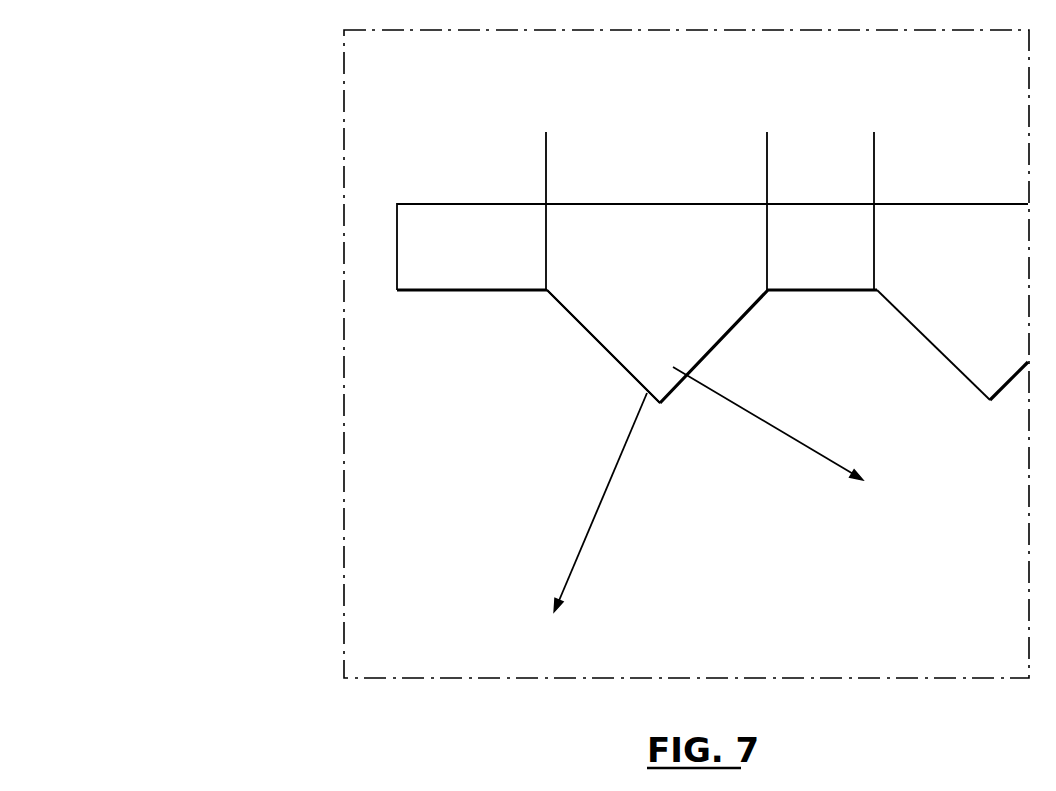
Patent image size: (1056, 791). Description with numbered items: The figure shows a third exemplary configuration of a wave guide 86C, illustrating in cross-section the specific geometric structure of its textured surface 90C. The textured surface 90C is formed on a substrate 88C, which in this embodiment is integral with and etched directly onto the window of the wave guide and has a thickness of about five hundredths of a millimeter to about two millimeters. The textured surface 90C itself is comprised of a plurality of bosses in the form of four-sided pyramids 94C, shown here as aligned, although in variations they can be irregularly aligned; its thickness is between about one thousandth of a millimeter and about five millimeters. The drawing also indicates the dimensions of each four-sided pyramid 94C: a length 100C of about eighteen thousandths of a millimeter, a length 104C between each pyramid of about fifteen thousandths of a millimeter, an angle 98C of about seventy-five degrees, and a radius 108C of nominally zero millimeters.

The wave guide 86C is at (266, 147).
The substrate 88C is at (410, 247).
The four-sided pyramid 94C is at (597, 308).
The textured surface 90C is at (607, 364).
The length dimension 100C is at (758, 154).
The length between each pyramid 104C is at (866, 154).
The angle dimension 98C is at (835, 463).
The radius dimension 108C is at (593, 523).